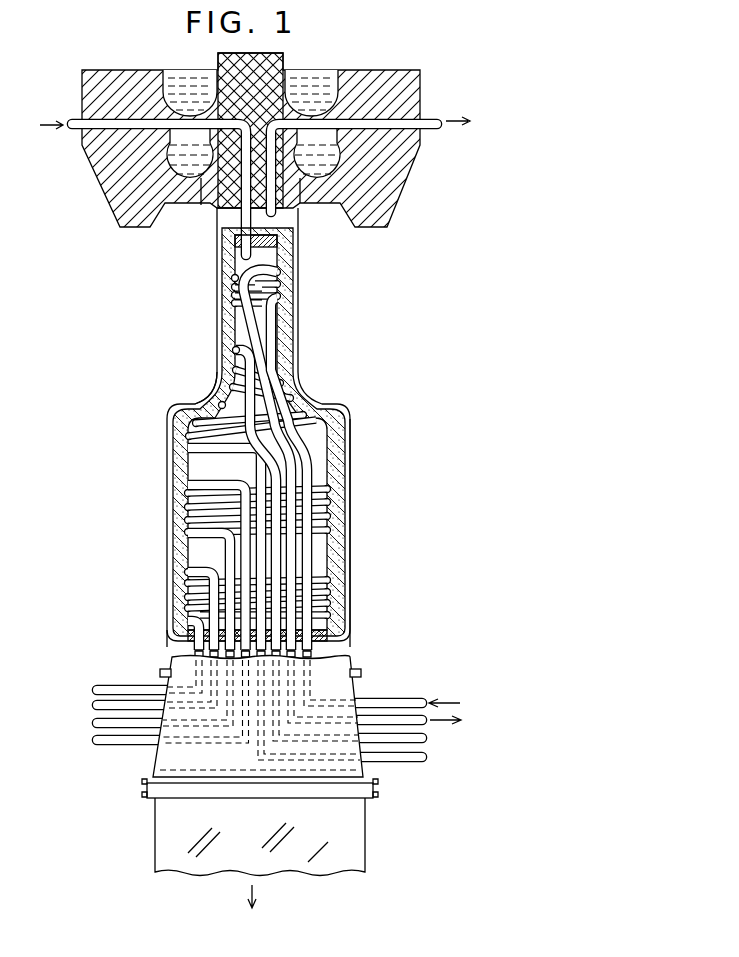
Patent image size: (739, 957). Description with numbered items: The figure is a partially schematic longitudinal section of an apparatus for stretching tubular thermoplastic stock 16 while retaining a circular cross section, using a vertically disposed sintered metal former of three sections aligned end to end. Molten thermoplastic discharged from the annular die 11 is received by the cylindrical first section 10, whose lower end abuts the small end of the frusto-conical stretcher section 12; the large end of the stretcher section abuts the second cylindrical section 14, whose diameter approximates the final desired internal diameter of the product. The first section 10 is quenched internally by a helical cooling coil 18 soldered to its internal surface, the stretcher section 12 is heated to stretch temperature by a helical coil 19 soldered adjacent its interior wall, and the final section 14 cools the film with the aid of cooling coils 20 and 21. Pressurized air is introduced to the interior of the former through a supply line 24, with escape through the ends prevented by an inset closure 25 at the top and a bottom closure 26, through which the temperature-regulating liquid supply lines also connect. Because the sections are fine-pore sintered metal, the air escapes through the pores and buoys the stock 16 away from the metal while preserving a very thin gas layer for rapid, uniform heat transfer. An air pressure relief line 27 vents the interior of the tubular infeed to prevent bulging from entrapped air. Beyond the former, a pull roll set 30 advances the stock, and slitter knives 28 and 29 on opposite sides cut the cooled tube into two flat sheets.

The first section 10 is at (222, 252).
The annular die 11 is at (294, 212).
The frusto-conical stretcher section 12 is at (224, 395).
The second cylindrical section 14 is at (175, 547).
The tubular thermoplastic stock 16 is at (350, 476).
The helical cooling coil 18 is at (233, 292).
The helical coil 19 is at (235, 350).
The cooling coil 20 is at (186, 486).
The cooling coil 21 is at (186, 572).
The supply line 24 is at (92, 120).
The inset closure 25 is at (252, 243).
The bottom closure 26 is at (330, 637).
The air pressure relief line 27 is at (432, 117).
The slitter knife 28 is at (161, 675).
The slitter knife 29 is at (362, 676).
The pull roll set 30 is at (386, 792).